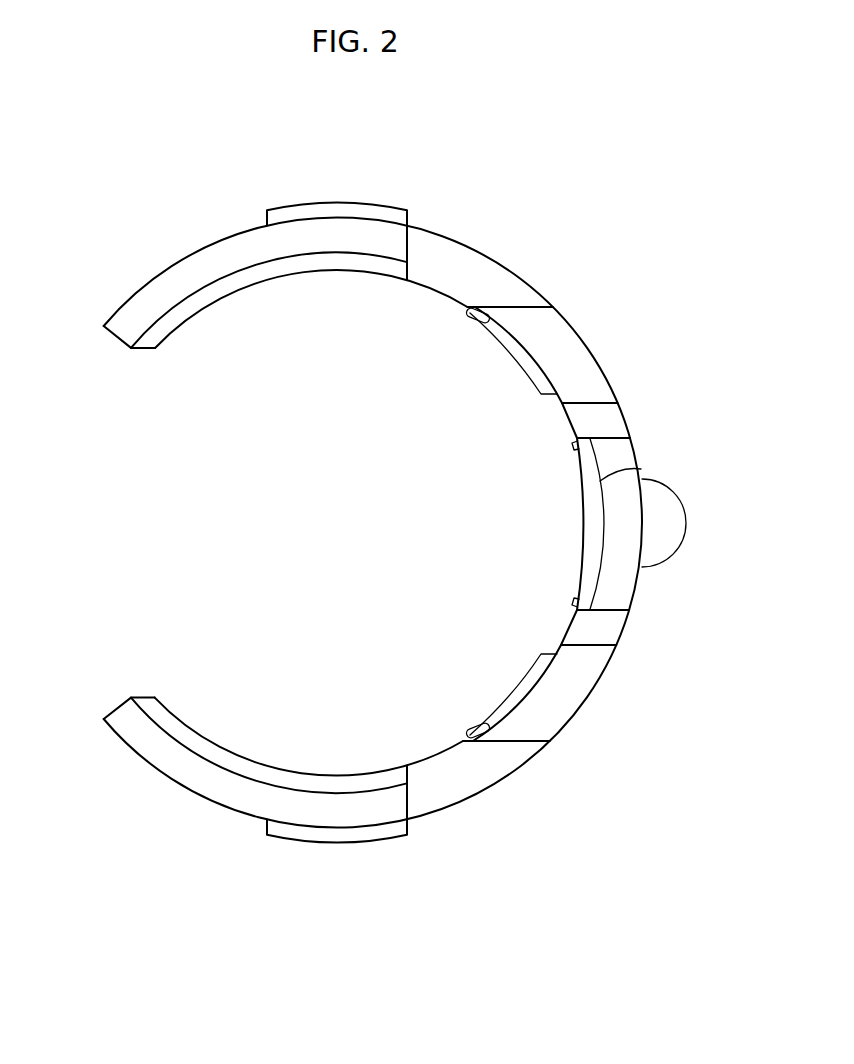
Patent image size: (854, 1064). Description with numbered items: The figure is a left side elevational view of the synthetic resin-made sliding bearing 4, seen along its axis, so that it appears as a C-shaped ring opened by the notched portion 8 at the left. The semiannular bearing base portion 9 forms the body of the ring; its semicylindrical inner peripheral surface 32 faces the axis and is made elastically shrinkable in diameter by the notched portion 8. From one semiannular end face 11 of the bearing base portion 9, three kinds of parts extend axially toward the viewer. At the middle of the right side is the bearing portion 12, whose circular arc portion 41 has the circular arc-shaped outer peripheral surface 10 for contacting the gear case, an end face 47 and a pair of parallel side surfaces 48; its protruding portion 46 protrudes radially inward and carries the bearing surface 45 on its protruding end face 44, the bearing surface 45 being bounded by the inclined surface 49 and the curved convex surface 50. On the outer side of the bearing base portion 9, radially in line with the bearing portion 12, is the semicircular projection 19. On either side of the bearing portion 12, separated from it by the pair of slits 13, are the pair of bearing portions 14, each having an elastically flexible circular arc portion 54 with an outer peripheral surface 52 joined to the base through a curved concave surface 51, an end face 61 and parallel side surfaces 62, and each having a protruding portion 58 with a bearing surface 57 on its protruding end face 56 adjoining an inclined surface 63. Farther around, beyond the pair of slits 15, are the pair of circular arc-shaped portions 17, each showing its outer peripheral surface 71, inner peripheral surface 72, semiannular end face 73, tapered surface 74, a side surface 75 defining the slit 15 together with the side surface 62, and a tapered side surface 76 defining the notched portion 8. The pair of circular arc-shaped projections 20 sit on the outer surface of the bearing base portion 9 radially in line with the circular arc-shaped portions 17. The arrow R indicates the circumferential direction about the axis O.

The synthetic resin-made sliding bearing 4 is at (592, 323).
The notched portion 8 is at (102, 541).
The bearing base portion 9 is at (448, 256).
The outer peripheral surface 10 is at (635, 451).
The end face 11 is at (453, 790).
The bearing portion 12 is at (645, 590).
The slits 13 is at (608, 418).
The bearing portions 14 is at (554, 313).
The slits 15 is at (433, 247).
The circular arc-shaped portions 17 is at (124, 292).
The semicircular projection 19 is at (673, 521).
The circular arc-shaped projections 20 is at (334, 208).
The inner peripheral surface 32 is at (440, 292).
The circular arc portion 41 is at (627, 505).
The protruding end face 44 is at (580, 546).
The bearing surface 45 is at (580, 486).
The protruding portion 46 is at (588, 532).
The end face 47 is at (627, 540).
The side surfaces 48 is at (598, 439).
The inclined surface 49 is at (625, 468).
The curved convex surface 50 is at (572, 445).
The curved concave surface 51 is at (582, 379).
The outer peripheral surface 52 is at (575, 353).
The circular arc portion 54 is at (538, 337).
The protruding end face 56 is at (479, 324).
The bearing surface 57 is at (517, 362).
The protruding portion 58 is at (489, 322).
The end face 61 is at (610, 387).
The side surfaces 62 is at (511, 305).
The inclined surface 63 is at (543, 378).
The outer peripheral surface 71 is at (170, 270).
The inner peripheral surface 72 is at (222, 296).
The end face 73 is at (160, 298).
The tapered surface 74 is at (299, 264).
The side surface 75 is at (408, 248).
The side surface 76 is at (120, 338).